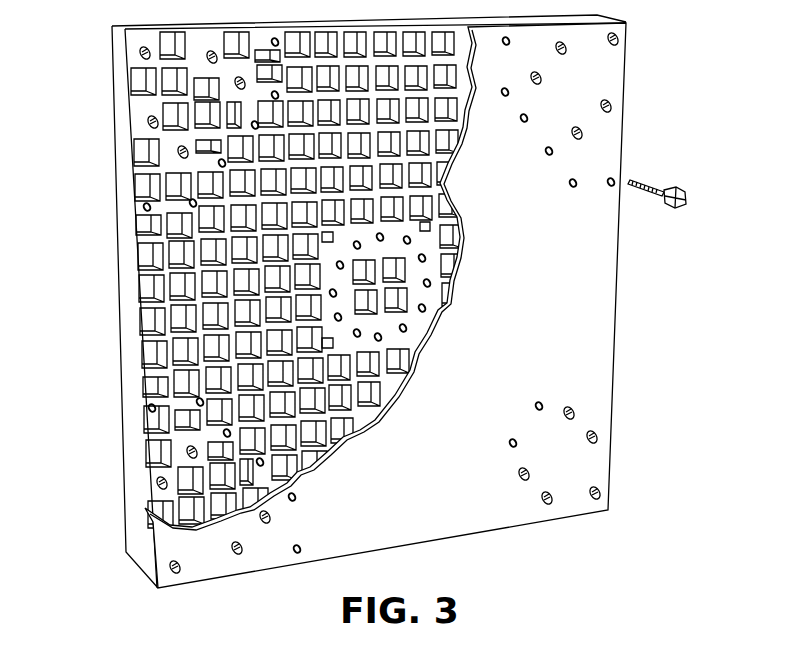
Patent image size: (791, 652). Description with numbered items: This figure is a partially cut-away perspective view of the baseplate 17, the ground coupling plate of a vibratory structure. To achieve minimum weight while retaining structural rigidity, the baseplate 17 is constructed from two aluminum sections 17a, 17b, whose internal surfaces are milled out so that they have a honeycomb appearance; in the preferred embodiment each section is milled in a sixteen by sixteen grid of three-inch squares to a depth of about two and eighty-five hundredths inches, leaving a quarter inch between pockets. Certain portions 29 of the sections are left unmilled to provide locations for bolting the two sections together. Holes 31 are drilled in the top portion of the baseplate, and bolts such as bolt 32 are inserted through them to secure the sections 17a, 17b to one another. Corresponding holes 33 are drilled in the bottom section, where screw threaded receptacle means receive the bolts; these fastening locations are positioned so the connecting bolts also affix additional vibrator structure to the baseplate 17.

The baseplate 17 is at (345, 310).
The baseplate section 17a is at (381, 322).
The baseplate section 17b is at (350, 298).
The unmilled portions 29 is at (140, 130).
The holes 31 is at (608, 112).
The bolt 32 is at (661, 194).
The corresponding holes 33 is at (238, 80).